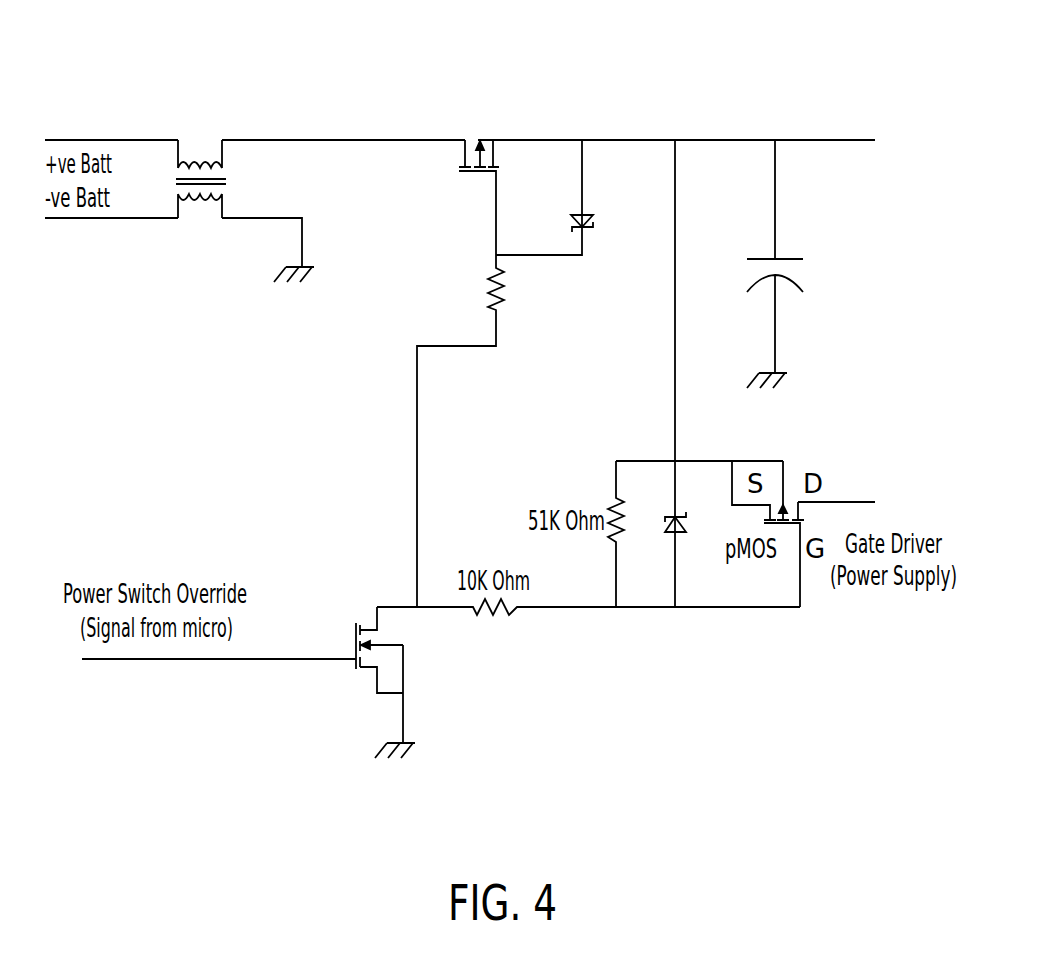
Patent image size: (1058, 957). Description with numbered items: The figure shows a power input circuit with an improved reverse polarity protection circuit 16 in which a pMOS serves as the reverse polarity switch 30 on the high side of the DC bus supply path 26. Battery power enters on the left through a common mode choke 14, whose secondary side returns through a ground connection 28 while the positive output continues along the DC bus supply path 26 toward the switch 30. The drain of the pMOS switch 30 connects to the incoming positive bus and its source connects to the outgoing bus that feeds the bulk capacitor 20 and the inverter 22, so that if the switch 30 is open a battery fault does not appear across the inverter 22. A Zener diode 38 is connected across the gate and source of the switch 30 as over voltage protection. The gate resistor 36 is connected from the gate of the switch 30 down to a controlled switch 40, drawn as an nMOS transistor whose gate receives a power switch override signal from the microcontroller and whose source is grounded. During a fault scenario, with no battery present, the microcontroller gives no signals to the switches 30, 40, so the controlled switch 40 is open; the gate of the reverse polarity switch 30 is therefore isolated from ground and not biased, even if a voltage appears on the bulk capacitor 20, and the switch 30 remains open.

The common mode choke 14 is at (183, 170).
The reverse polarity protection circuit 16 is at (622, 150).
The bulk capacitor 20 is at (782, 258).
The inverter 22 is at (898, 155).
The DC bus supply path 26 is at (250, 140).
The ground return line 28 is at (250, 220).
The switch 30 is at (457, 185).
The gate resistor 36 is at (490, 290).
The Zener diode 38 is at (590, 216).
The controlled switch 40 is at (338, 558).